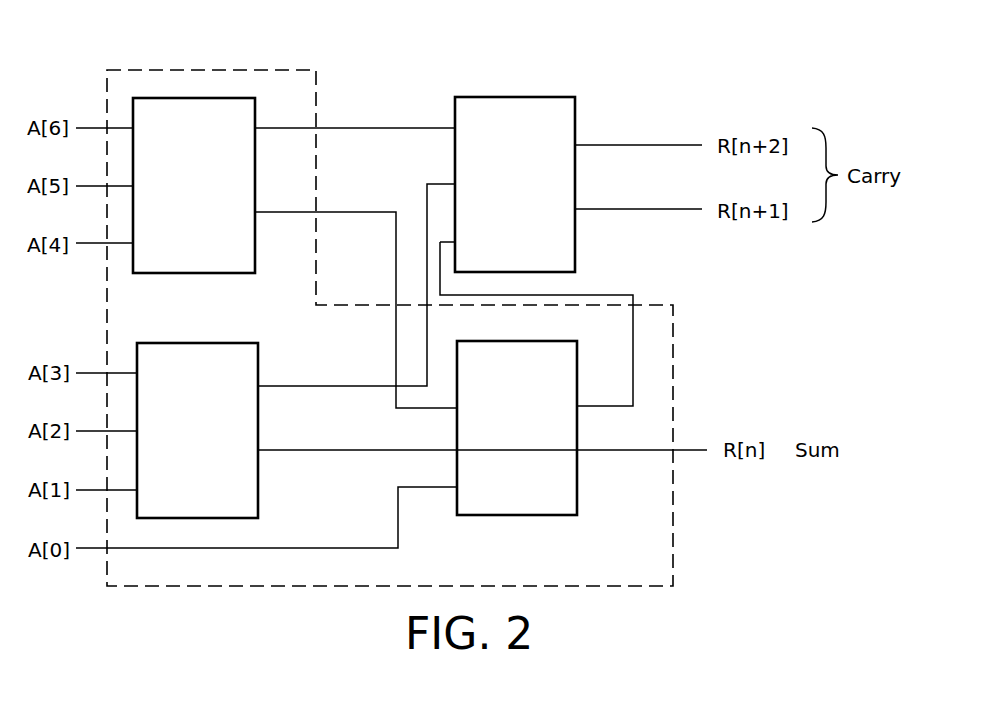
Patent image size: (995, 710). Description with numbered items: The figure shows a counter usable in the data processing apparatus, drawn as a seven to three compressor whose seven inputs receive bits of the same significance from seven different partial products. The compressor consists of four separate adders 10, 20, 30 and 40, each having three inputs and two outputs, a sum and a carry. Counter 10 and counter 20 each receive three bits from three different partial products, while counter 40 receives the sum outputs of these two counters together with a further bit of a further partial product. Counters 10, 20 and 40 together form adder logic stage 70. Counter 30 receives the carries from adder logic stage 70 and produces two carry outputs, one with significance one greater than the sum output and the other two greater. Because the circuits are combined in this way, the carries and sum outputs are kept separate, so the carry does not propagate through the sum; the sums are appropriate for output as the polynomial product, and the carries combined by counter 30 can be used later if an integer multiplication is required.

The adder 10 is at (192, 98).
The adder 20 is at (200, 518).
The adder 30 is at (511, 97).
The adder 40 is at (521, 515).
The adder logic stage 70 is at (673, 578).